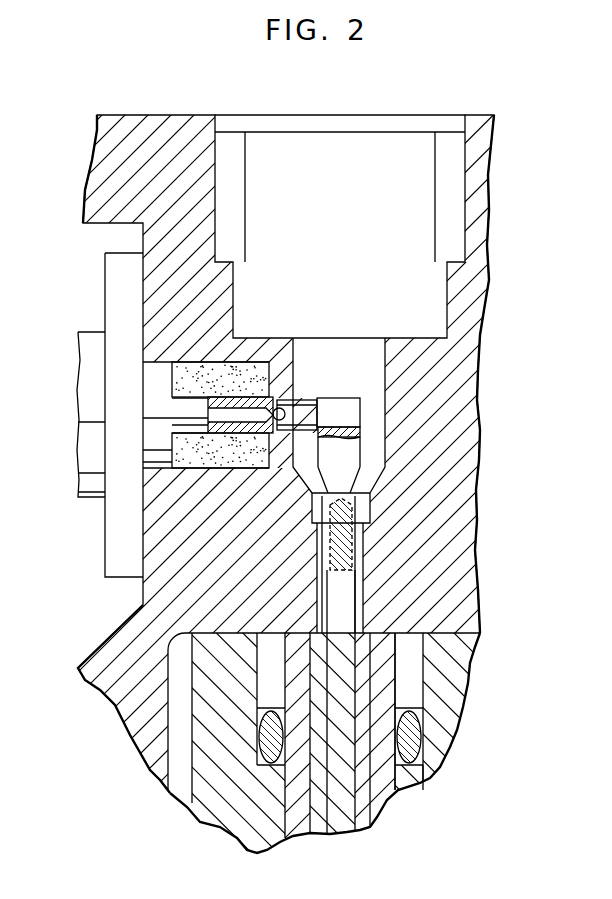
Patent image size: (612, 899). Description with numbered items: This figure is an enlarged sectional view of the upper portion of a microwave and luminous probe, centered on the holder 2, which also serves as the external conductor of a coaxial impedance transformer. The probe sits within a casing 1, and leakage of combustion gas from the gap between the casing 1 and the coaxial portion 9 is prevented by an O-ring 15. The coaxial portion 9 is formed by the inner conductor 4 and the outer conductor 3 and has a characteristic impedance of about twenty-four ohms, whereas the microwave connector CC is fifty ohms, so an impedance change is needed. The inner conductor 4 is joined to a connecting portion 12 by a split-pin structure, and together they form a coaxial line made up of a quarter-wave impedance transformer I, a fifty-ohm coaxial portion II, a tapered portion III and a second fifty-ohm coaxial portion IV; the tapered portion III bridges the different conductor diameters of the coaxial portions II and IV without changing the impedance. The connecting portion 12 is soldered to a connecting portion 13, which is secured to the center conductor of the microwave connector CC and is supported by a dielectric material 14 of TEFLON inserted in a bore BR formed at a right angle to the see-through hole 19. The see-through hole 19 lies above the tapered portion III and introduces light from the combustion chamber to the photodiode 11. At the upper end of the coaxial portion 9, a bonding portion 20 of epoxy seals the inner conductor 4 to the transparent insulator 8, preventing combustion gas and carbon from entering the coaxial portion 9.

The casing 1 is at (207, 742).
The holder 2 is at (458, 397).
The outer conductor 3 is at (390, 770).
The inner conductor 4 is at (342, 707).
The transparent insulator 8 is at (363, 783).
The coaxial portion 9 is at (270, 830).
The photodiode 11 is at (420, 290).
The connecting portion 12 is at (352, 452).
The connecting portion 13 is at (302, 407).
The dielectric material 14 is at (183, 382).
The O-ring 15 is at (420, 743).
The see-through hole 19 is at (307, 350).
The bonding portion 20 is at (355, 673).
The microwave connector CC is at (105, 283).
The bore BR is at (205, 470).
The quarter-wave impedance transformer I is at (368, 568).
The 50-Ω coaxial portion II is at (370, 507).
The tapered portion III is at (378, 478).
The 50-Ω coaxial portion IV is at (388, 402).